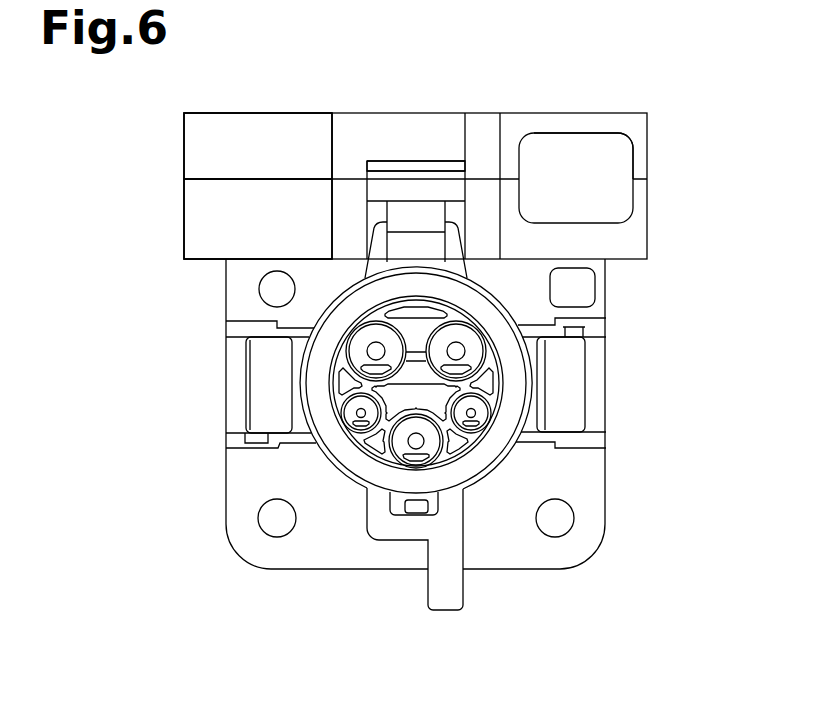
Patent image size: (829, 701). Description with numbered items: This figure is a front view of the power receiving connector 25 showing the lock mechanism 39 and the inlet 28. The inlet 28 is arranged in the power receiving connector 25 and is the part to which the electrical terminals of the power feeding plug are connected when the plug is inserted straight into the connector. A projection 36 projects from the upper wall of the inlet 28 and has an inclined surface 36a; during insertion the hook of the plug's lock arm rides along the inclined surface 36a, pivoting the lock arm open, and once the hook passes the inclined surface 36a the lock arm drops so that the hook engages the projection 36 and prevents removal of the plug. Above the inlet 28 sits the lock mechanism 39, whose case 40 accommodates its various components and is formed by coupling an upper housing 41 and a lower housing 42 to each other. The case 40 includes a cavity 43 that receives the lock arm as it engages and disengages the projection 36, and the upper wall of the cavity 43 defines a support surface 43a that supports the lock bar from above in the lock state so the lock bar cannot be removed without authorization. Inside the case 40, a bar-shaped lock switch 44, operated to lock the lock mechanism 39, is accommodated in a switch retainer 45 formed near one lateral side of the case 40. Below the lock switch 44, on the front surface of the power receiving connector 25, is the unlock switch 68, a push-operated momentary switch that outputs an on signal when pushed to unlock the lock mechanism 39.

The power receiving connector 25 is at (598, 583).
The inlet 28 is at (487, 454).
The projection 36 is at (412, 243).
The inclined surface 36a is at (402, 245).
The lock mechanism 39 is at (602, 113).
The case 40 is at (128, 153).
The upper housing 41 is at (190, 152).
The lower housing 42 is at (190, 206).
The cavity 43 is at (466, 212).
The support surface 43a is at (400, 172).
The lock switch 44 is at (623, 195).
The switch retainer 45 is at (622, 160).
The unlock switch 68 is at (582, 288).